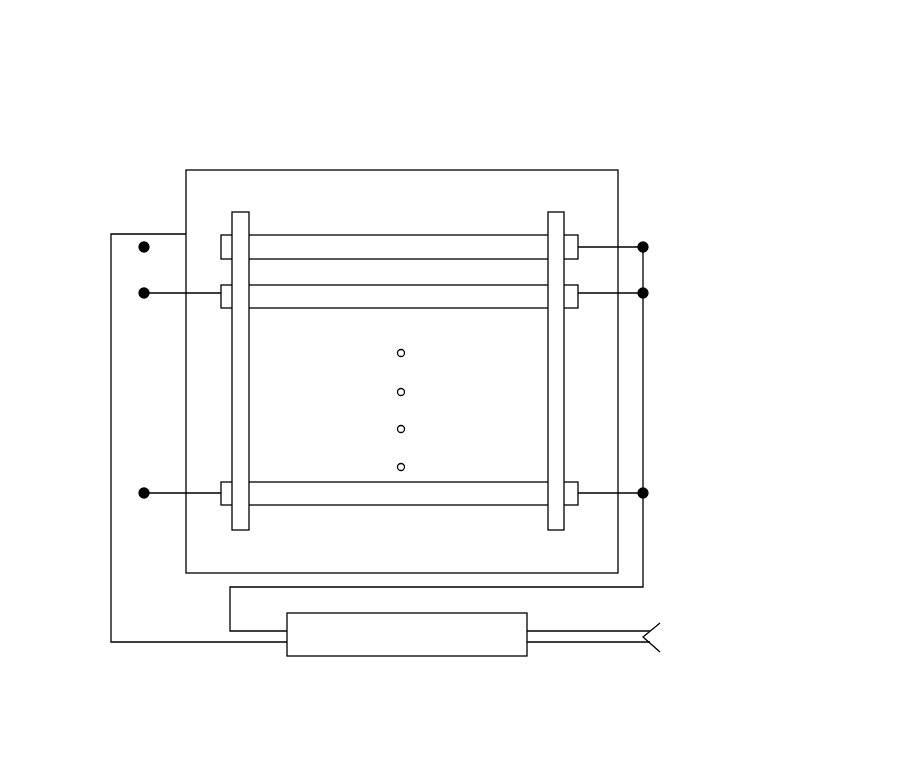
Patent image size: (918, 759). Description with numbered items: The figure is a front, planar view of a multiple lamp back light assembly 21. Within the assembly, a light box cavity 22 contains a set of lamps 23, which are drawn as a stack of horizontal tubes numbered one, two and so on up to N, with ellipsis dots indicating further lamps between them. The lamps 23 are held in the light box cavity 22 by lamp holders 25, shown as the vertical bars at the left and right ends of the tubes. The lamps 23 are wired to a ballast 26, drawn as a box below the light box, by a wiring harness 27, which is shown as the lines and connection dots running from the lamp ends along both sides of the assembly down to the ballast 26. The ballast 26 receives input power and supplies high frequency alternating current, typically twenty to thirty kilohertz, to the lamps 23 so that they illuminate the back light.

The back light assembly 21 is at (412, 104).
The light box cavity 22 is at (618, 200).
The lamps 23 is at (303, 285).
The lamp holders 25 is at (232, 338).
The ballast 26 is at (488, 657).
The wiring harness 27 is at (111, 477).